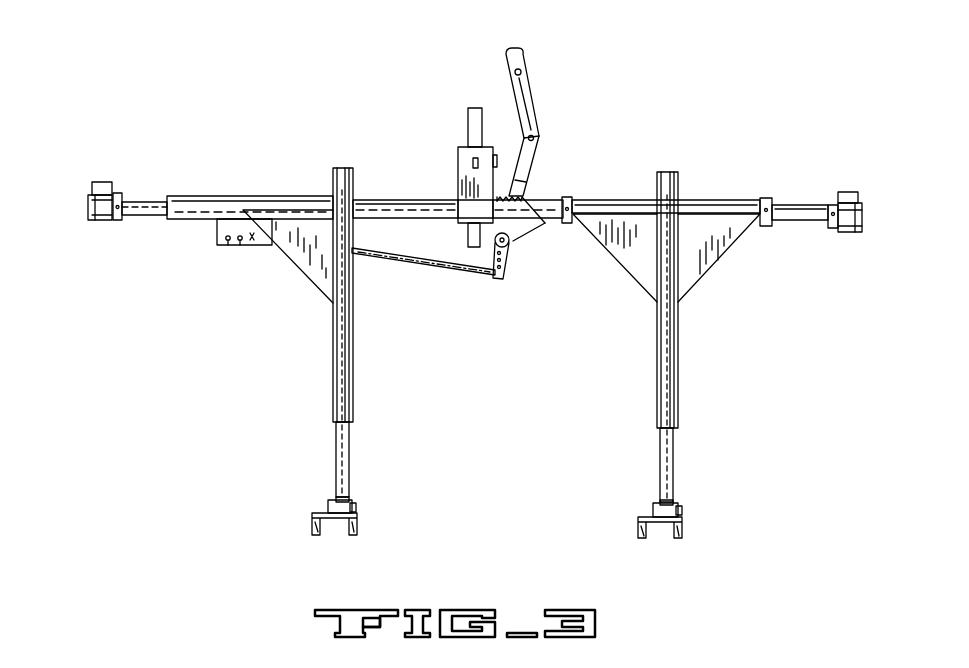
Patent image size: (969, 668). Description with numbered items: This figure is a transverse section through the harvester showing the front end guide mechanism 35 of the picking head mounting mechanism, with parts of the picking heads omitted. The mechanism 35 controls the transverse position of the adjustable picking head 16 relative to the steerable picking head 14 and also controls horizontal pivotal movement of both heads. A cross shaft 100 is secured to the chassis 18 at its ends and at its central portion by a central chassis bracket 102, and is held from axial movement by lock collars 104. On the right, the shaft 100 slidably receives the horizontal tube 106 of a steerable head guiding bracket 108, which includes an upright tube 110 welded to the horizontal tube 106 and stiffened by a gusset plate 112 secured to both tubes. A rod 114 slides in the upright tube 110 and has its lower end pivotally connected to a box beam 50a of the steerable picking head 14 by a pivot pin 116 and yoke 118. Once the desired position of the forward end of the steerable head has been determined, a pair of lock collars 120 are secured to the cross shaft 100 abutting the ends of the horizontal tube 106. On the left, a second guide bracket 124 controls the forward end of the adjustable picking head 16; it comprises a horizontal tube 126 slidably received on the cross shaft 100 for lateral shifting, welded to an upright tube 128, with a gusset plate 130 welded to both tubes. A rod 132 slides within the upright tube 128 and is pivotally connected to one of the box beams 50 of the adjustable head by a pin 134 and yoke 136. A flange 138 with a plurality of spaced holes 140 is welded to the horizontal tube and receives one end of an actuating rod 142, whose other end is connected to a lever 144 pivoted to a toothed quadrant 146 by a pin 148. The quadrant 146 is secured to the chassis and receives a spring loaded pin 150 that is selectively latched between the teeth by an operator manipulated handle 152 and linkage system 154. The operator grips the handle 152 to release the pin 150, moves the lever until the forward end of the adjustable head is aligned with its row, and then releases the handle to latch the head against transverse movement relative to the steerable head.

The steerable picking head 14 is at (674, 526).
The adjustable picking head 16 is at (321, 524).
The chassis 18 is at (100, 180).
The front end guide mechanism 35 is at (610, 152).
The box beam 50 is at (358, 522).
The box beam 50a is at (640, 520).
The cross shaft 100 is at (797, 205).
The central chassis bracket 102 is at (457, 160).
The lock collars 104 is at (119, 221).
The horizontal tube 106 is at (700, 199).
The steerable head guiding bracket 108 is at (696, 344).
The upright tube 110 is at (660, 409).
The gusset plate 112 is at (627, 258).
The rod 114 is at (660, 441).
The pivot pin 116 is at (683, 509).
The yoke 118 is at (660, 504).
The lock collars 120 is at (571, 200).
The second guide bracket 124 is at (331, 340).
The horizontal tube 126 is at (233, 197).
The upright tube 128 is at (353, 408).
The gusset plate 130 is at (310, 272).
The rod 132 is at (350, 440).
The pin 134 is at (358, 506).
The yoke 136 is at (330, 502).
The flange 138 is at (218, 228).
The holes 140 is at (240, 246).
The actuating rod 142 is at (412, 256).
The lever 144 is at (514, 88).
The toothed quadrant 146 is at (510, 238).
The pin 148 is at (468, 233).
The spring loaded pin 150 is at (524, 197).
The handle 152 is at (525, 55).
The linkage system 154 is at (532, 151).